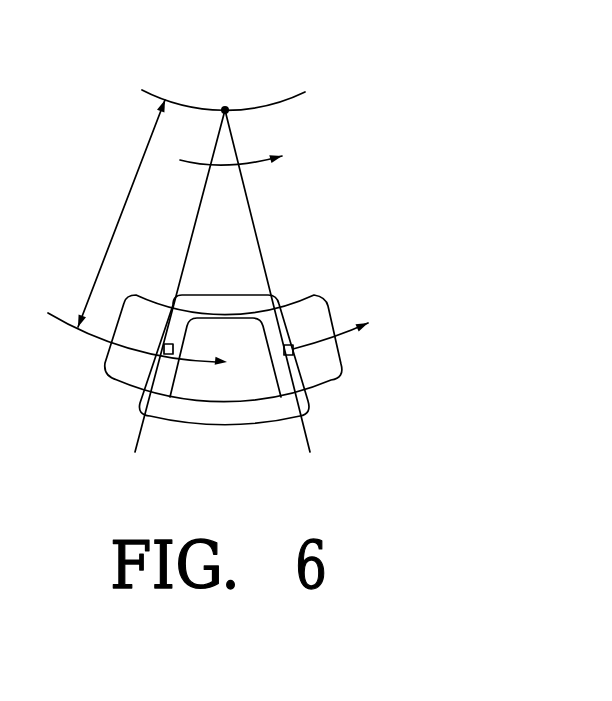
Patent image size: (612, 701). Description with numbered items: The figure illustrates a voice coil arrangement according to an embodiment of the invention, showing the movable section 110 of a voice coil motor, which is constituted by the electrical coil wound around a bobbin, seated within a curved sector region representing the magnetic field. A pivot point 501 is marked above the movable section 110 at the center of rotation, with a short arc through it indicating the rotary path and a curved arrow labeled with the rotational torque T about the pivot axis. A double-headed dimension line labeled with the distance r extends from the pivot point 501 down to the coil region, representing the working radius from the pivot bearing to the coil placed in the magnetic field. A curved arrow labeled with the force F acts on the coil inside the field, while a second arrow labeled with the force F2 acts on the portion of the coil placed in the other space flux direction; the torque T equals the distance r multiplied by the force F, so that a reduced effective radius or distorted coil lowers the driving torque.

The pivot point (center of rotation) 501 is at (225, 110).
The movable section 110 is at (235, 423).
The distance from the pivot bearing to the coil r is at (121, 213).
The rotational torque T is at (247, 155).
The force acting on the coil F is at (143, 339).
The force F2 is at (351, 327).